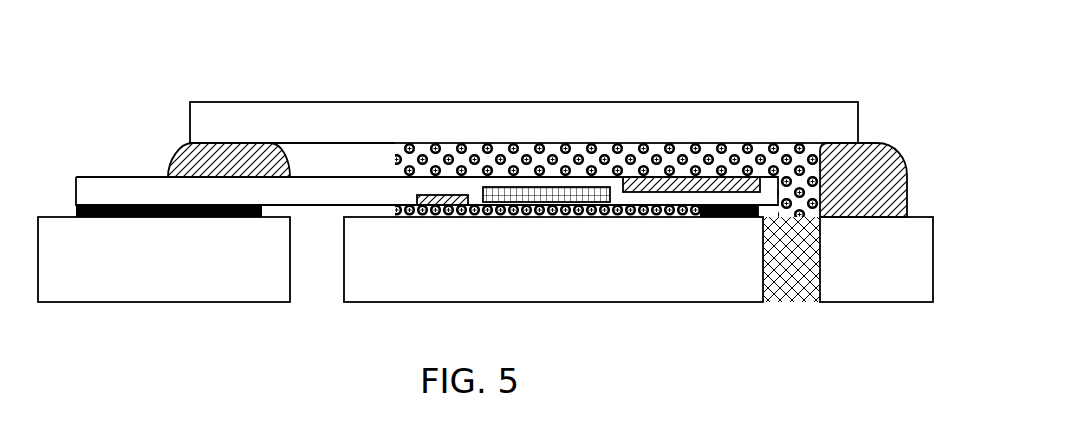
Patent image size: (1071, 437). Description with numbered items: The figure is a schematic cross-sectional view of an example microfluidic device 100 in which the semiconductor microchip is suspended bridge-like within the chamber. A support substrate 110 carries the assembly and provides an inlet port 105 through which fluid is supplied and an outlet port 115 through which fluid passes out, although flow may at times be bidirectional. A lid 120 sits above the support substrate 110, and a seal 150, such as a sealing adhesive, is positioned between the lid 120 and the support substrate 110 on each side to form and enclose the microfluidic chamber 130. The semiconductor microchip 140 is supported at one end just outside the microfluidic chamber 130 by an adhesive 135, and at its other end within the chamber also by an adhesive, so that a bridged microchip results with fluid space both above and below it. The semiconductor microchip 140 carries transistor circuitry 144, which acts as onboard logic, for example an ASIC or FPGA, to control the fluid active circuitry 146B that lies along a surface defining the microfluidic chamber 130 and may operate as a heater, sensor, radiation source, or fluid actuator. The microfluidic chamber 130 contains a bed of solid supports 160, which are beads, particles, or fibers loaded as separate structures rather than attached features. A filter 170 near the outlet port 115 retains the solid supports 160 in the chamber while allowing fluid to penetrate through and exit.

The microfluidic device 100 is at (160, 48).
The inlet port 105 is at (313, 312).
The support substrate 110 is at (185, 271).
The outlet port 115 is at (792, 313).
The lid 120 is at (423, 122).
The microfluidic chamber 130 is at (353, 173).
The adhesive 135 is at (105, 205).
The semiconductor microchip 140 is at (157, 195).
The transistor circuitry 144 is at (542, 195).
The fluid active circuitry 146B is at (450, 200).
The seal 150 is at (227, 157).
The solid supports 160 is at (668, 168).
The filter 170 is at (803, 262).